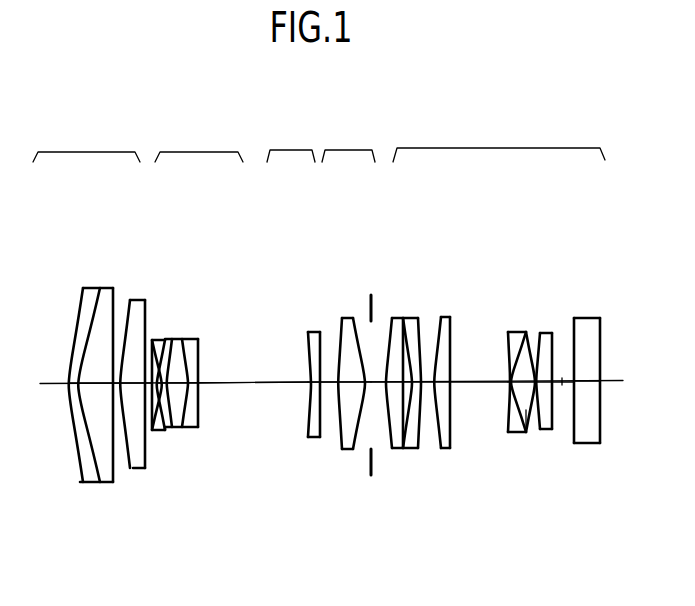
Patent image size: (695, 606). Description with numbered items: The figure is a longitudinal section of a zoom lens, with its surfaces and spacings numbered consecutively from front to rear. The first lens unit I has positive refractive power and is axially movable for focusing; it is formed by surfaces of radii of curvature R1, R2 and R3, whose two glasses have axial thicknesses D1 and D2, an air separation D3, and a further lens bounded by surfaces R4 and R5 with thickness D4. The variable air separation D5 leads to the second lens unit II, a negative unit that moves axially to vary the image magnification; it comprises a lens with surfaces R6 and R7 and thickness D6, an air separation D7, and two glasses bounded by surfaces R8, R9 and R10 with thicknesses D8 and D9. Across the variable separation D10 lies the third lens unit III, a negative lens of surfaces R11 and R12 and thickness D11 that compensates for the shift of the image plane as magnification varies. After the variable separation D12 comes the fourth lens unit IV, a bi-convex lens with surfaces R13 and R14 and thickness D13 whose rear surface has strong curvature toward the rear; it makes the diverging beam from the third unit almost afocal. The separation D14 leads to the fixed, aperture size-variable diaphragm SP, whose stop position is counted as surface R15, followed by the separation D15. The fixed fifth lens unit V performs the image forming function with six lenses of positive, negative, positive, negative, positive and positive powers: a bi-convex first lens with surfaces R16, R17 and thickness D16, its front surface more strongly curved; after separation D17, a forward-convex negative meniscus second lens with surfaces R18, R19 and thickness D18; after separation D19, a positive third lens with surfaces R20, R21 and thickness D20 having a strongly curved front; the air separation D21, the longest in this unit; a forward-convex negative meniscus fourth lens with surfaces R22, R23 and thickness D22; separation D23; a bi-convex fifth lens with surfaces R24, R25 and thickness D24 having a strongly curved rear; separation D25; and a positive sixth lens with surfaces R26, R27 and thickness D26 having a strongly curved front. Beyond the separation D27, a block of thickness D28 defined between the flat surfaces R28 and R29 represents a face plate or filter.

The first lens unit I is at (91, 302).
The second lens unit II is at (197, 276).
The third lens unit III is at (294, 280).
The fourth lens unit IV is at (349, 286).
The fifth lens unit V is at (520, 285).
The diaphragm SP is at (402, 284).
The first surface radius of curvature R1 is at (80, 296).
The second surface radius of curvature R2 is at (102, 288).
The third surface radius of curvature R3 is at (113, 288).
The fourth surface radius of curvature R4 is at (131, 298).
The fifth surface radius of curvature R5 is at (150, 297).
The sixth surface radius of curvature R6 is at (152, 340).
The seventh surface radius of curvature R7 is at (173, 339).
The eighth surface radius of curvature R8 is at (177, 339).
The ninth surface radius of curvature R9 is at (186, 339).
The tenth surface radius of curvature R10 is at (204, 339).
The eleventh surface radius of curvature R11 is at (307, 332).
The twelfth surface radius of curvature R12 is at (315, 332).
The thirteenth surface radius of curvature R13 is at (343, 320).
The fourteenth surface radius of curvature R14 is at (356, 328).
The stop surface R15 is at (371, 294).
The sixteenth surface radius of curvature R16 is at (391, 318).
The seventeenth surface radius of curvature R17 is at (399, 318).
The eighteenth surface radius of curvature R18 is at (408, 318).
The nineteenth surface radius of curvature R19 is at (420, 318).
The twentieth surface radius of curvature R20 is at (445, 318).
The twenty-first surface radius of curvature R21 is at (456, 318).
The twenty-second surface radius of curvature R22 is at (498, 333).
The twenty-third surface radius of curvature R23 is at (513, 331).
The twenty-fourth surface radius of curvature R24 is at (523, 332).
The twenty-fifth surface radius of curvature R25 is at (540, 332).
The twenty-sixth surface radius of curvature R26 is at (552, 333).
The twenty-seventh surface radius of curvature R27 is at (562, 336).
The front flat surface of face plate R28 is at (576, 322).
The rear flat surface of face plate R29 is at (602, 330).
The first axial thickness D1 is at (73, 385).
The second axial thickness D2 is at (98, 385).
The third axial separation D3 is at (119, 385).
The fourth axial thickness D4 is at (137, 385).
The fifth axial separation D5 is at (152, 385).
The sixth axial thickness D6 is at (163, 385).
The seventh axial separation D7 is at (172, 385).
The eighth axial thickness D8 is at (185, 385).
The ninth axial thickness D9 is at (195, 385).
The tenth axial separation D10 is at (240, 384).
The eleventh axial thickness D11 is at (310, 384).
The twelfth axial separation D12 is at (330, 384).
The thirteenth axial thickness D13 is at (352, 384).
The fourteenth axial separation D14 is at (368, 384).
The fifteenth axial separation D15 is at (383, 383).
The sixteenth axial thickness D16 is at (395, 383).
The seventeenth axial separation D17 is at (410, 383).
The eighteenth axial thickness D18 is at (413, 383).
The nineteenth axial separation D19 is at (428, 383).
The twentieth axial thickness D20 is at (437, 383).
The twenty-first axial separation D21 is at (480, 383).
The twenty-second axial thickness D22 is at (507, 382).
The twenty-third axial separation D23 is at (511, 382).
The twenty-fourth axial thickness D24 is at (525, 433).
The twenty-fifth axial separation D25 is at (547, 382).
The twenty-sixth axial thickness D26 is at (558, 382).
The twenty-seventh axial separation D27 is at (567, 382).
The twenty-eighth axial thickness D28 is at (586, 365).